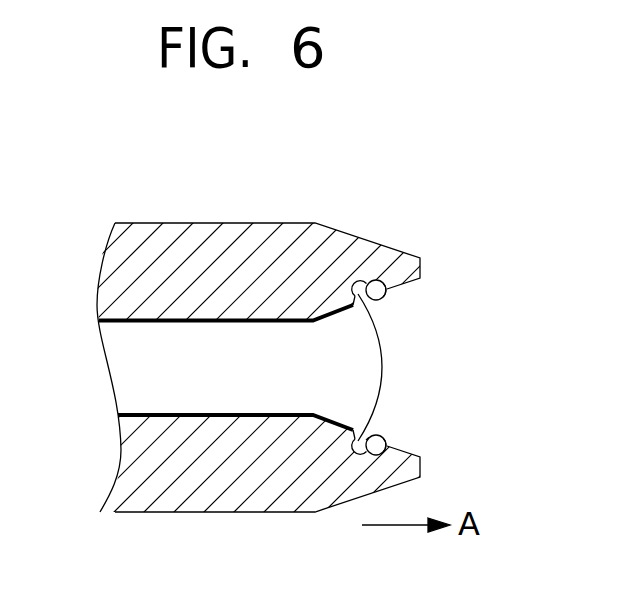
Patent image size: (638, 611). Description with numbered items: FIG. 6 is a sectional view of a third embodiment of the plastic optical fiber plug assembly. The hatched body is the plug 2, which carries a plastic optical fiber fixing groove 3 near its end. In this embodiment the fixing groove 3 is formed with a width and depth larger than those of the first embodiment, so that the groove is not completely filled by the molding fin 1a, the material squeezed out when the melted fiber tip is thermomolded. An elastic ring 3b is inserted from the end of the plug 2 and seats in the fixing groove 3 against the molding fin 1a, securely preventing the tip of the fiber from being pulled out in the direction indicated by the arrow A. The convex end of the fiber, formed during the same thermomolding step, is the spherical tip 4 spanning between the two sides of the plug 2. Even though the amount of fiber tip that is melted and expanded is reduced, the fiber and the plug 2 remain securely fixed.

The plug 2 is at (199, 260).
The molding fin 1a is at (353, 296).
The plastic optical fiber fixing groove 3 is at (367, 282).
The elastic ring 3b is at (383, 297).
The spherical tip 4 is at (383, 371).